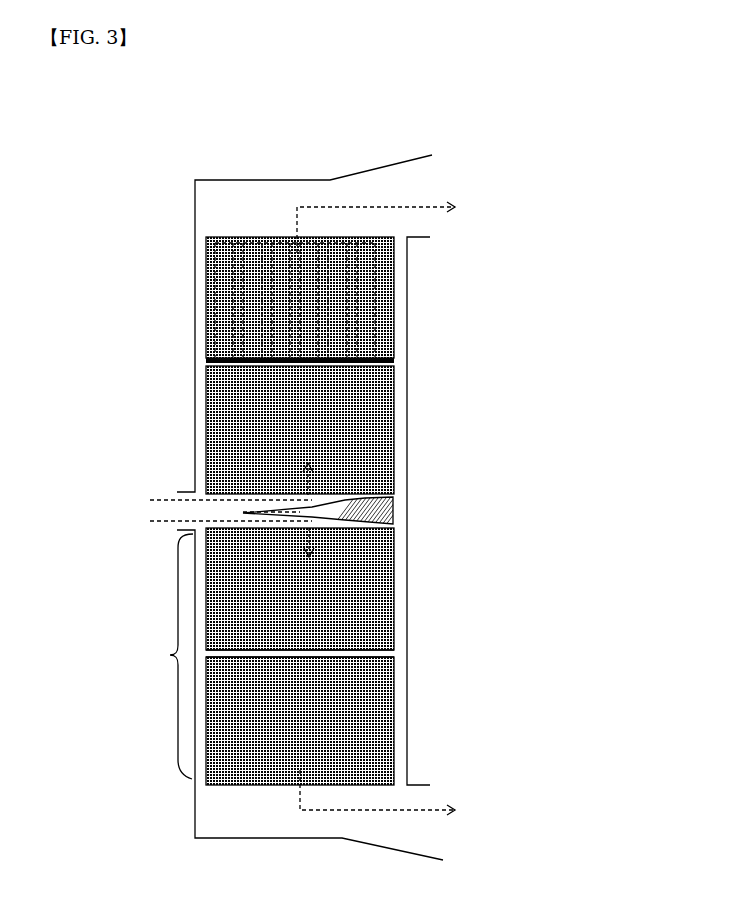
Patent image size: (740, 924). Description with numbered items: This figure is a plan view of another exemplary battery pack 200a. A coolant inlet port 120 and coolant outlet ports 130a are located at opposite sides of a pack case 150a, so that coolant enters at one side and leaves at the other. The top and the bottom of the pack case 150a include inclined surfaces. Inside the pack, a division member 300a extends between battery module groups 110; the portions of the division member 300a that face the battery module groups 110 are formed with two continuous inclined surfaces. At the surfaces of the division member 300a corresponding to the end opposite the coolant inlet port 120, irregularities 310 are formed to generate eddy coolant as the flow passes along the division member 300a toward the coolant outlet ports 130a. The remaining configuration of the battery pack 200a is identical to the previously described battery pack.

The battery pack 200a is at (100, 173).
The battery module groups 110 is at (170, 655).
The coolant inlet port 120 is at (196, 543).
The coolant outlet ports 130a is at (425, 496).
The pack case 150a is at (241, 306).
The division member 300a is at (378, 491).
The irregularities 310 is at (414, 495).